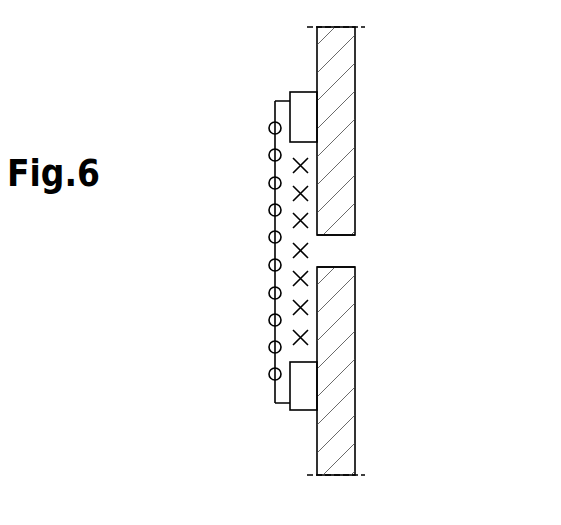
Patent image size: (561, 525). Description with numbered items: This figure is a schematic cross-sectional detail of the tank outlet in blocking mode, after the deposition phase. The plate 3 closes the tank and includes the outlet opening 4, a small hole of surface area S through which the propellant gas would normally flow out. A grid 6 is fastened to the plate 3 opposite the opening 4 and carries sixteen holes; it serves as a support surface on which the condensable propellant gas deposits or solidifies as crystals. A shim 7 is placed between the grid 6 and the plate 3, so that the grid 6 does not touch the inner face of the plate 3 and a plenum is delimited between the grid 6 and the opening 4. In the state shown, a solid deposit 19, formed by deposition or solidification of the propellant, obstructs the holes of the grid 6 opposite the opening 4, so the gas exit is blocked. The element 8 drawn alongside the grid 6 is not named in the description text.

The plate 3 is at (343, 61).
The opening 4 is at (337, 250).
The grid 6 is at (272, 111).
The shim 7 is at (303, 102).
The chain / cable 8 is at (298, 265).
The solid deposit 19 is at (300, 193).